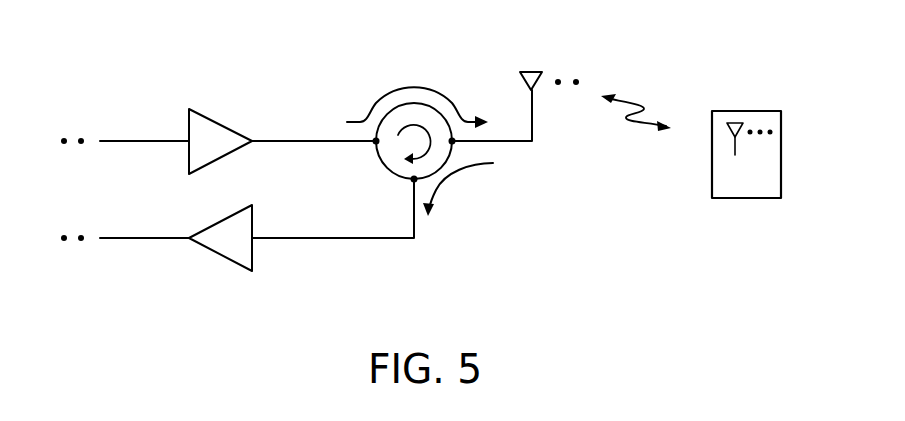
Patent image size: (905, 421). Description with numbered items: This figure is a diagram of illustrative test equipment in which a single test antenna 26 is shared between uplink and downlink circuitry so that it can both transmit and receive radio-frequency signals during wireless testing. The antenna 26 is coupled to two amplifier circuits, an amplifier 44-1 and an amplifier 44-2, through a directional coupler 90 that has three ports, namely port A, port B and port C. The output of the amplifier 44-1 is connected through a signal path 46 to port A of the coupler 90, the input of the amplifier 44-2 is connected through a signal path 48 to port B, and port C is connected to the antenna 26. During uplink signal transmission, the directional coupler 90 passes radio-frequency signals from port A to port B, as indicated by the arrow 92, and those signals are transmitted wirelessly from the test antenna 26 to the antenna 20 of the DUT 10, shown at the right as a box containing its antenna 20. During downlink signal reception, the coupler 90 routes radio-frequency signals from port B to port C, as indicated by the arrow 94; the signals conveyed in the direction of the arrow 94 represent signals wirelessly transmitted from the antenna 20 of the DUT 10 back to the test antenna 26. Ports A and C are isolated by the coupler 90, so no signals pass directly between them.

The DUT 10 is at (791, 96).
The antenna 20 is at (735, 122).
The antenna 26 is at (528, 72).
The amplifier 44-1 is at (212, 121).
The amplifier 44-2 is at (218, 254).
The transmit signal path 46 is at (305, 140).
The receive signal path 48 is at (317, 240).
The directional coupler 90 is at (385, 165).
The arrow 92 is at (413, 88).
The arrow 94 is at (454, 170).
The port A is at (364, 152).
The port B is at (453, 138).
The port C is at (410, 181).